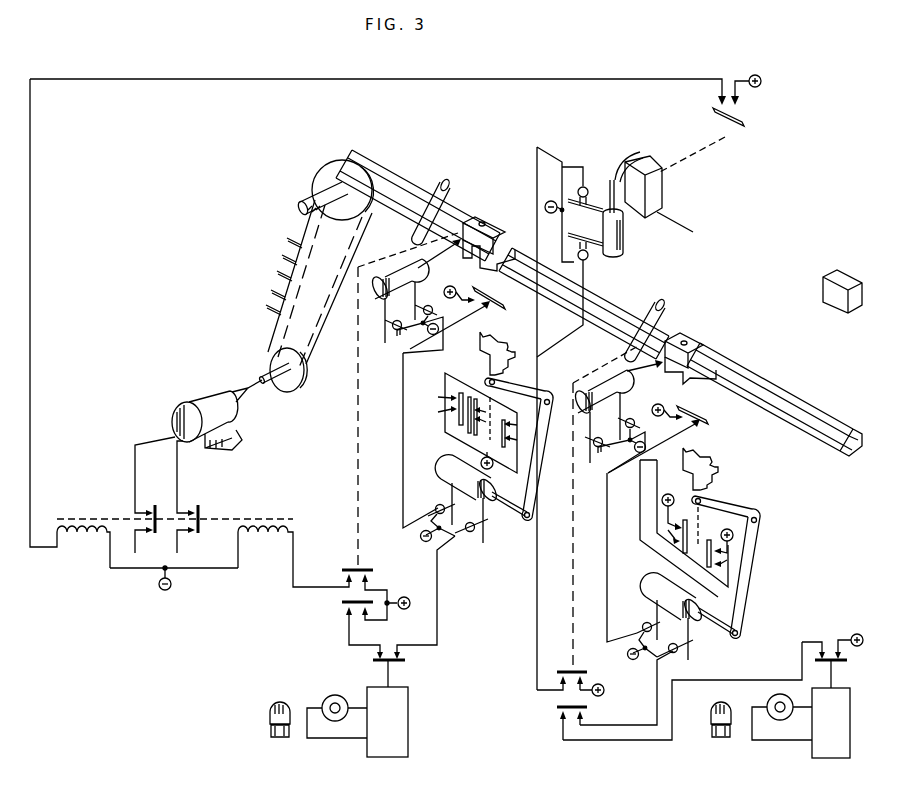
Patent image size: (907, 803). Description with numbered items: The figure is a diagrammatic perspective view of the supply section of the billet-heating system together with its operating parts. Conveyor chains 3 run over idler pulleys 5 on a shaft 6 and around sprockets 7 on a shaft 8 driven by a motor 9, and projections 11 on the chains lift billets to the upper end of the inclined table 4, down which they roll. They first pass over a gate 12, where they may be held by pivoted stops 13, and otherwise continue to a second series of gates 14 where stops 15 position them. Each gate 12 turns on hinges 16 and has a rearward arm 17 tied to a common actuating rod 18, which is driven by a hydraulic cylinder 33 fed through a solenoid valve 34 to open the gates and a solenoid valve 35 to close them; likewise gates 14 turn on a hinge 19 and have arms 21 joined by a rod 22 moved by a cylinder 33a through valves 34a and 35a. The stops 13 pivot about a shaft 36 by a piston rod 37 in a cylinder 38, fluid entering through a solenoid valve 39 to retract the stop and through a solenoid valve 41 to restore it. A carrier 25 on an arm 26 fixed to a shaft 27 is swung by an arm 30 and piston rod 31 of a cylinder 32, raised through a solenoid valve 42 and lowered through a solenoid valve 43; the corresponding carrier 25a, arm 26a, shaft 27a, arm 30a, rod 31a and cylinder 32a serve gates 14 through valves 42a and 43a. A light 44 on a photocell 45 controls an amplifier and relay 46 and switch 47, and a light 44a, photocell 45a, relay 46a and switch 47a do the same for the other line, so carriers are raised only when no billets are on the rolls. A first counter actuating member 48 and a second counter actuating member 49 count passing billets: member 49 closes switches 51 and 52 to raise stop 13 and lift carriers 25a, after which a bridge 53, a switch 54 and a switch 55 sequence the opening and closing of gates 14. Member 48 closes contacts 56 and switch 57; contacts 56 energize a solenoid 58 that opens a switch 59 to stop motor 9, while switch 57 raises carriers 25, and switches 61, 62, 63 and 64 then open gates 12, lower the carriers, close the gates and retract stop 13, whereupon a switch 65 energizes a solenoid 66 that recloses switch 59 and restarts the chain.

The conveyor chains 3 is at (302, 235).
The inclined table 4 is at (621, 307).
The idler pulleys 5 is at (328, 172).
The shaft 6 is at (316, 197).
The sprockets 7 is at (293, 356).
The shaft 8 is at (269, 376).
The motor 9 is at (205, 397).
The projections 11 is at (277, 270).
The gate 12 is at (503, 238).
The stops 13 is at (643, 160).
The gates 14 is at (710, 353).
The stops 15 is at (849, 282).
The hinges 16 is at (486, 218).
The arm 17 is at (461, 267).
The actuating rod 18 is at (442, 250).
The hinge 19 is at (689, 336).
The arms 21 is at (660, 380).
The actuating rod 22 is at (636, 374).
The carrier 25 is at (500, 345).
The carrier 25a is at (708, 460).
The arm 26 is at (527, 387).
The arm 26a is at (732, 505).
The shaft 27 is at (558, 392).
The shaft 27a is at (763, 515).
The arm 30 is at (542, 447).
The arm 30a is at (753, 570).
The piston rod 31 is at (507, 508).
The piston rod 31a is at (715, 630).
The cylinder 32 is at (467, 462).
The cylinder 32a is at (670, 579).
The hydraulic cylinder 33 is at (405, 267).
The hydraulic cylinder 33a is at (602, 382).
The solenoid valve 34 is at (393, 343).
The solenoid valve 34a is at (595, 460).
The solenoid valve 35 is at (431, 303).
The solenoid valve 35a is at (626, 432).
The shaft 36 is at (663, 208).
The piston rod 37 is at (617, 200).
The cylinder 38 is at (625, 247).
The solenoid valve 39 is at (590, 188).
The solenoid valve 41 is at (590, 260).
The solenoid valve 42 is at (470, 536).
The solenoid valve 42a is at (681, 658).
The solenoid valve 43 is at (438, 504).
The solenoid valve 43a is at (647, 621).
The light 44 is at (268, 712).
The light 44a is at (710, 714).
The photocell 45 is at (331, 695).
The photocell 45a is at (770, 703).
The amplifier and relay 46 is at (408, 713).
The amplifier and relay 46a is at (850, 722).
The switch 47 is at (400, 662).
The switch 47a is at (847, 663).
The first counter actuating member 48 is at (445, 184).
The second counter actuating member 49 is at (659, 306).
The switch 51 is at (580, 667).
The switch 52 is at (555, 704).
The bridge 53 is at (690, 515).
The switch 54 is at (710, 423).
The switch 55 is at (709, 540).
The contacts 56 is at (346, 566).
The switch 57 is at (342, 603).
The solenoid 58 is at (277, 536).
The switch 59 is at (192, 496).
The switch 61 is at (468, 423).
The switch 62 is at (503, 303).
The switch 63 is at (469, 395).
The switch 64 is at (504, 420).
The switch 65 is at (740, 127).
The solenoid 66 is at (94, 536).